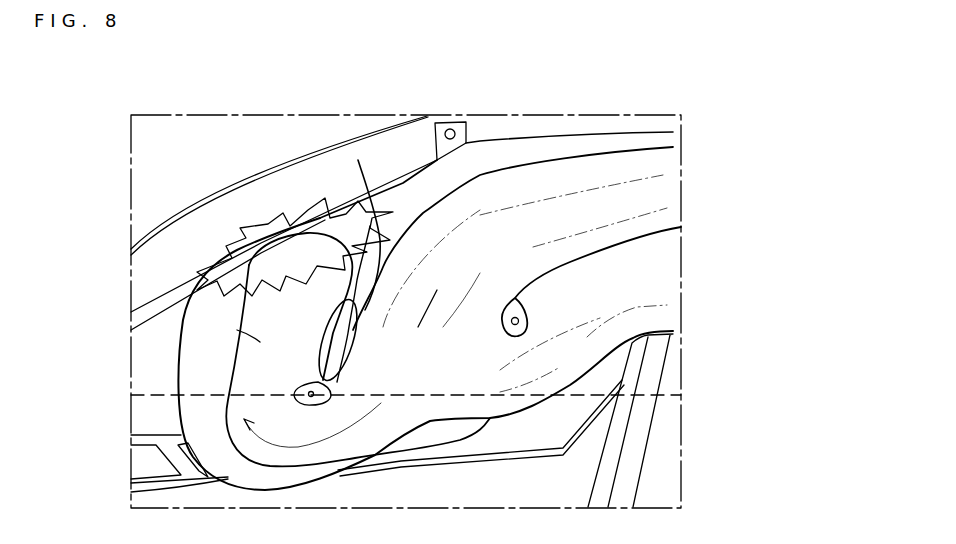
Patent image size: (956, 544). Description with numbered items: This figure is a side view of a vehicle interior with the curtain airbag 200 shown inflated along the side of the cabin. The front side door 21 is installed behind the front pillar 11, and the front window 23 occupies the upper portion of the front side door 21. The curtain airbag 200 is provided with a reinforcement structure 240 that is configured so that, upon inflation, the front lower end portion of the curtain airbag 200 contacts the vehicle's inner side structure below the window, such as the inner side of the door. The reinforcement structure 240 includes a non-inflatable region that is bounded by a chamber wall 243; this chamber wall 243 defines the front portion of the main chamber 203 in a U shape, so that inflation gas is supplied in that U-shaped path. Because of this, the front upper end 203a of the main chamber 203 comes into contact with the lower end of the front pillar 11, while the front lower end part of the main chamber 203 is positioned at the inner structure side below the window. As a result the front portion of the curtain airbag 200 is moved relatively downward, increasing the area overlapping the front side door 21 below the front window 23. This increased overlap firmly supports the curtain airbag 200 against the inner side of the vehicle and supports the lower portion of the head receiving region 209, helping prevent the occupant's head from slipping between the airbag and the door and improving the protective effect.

The front pillar 11 is at (311, 182).
The front side door 21 is at (148, 408).
The front window 23 is at (150, 372).
The curtain airbag 200 is at (602, 282).
The main chamber 203 is at (508, 226).
The front upper end of the main chamber 203a is at (277, 252).
The head receiving region 209 is at (140, 322).
The reinforcement structure 240 is at (346, 330).
The chamber wall 243 is at (358, 160).